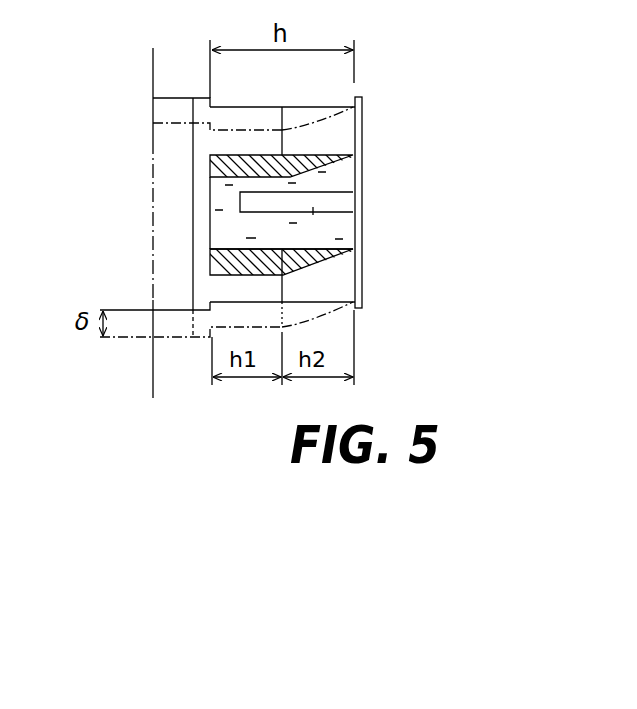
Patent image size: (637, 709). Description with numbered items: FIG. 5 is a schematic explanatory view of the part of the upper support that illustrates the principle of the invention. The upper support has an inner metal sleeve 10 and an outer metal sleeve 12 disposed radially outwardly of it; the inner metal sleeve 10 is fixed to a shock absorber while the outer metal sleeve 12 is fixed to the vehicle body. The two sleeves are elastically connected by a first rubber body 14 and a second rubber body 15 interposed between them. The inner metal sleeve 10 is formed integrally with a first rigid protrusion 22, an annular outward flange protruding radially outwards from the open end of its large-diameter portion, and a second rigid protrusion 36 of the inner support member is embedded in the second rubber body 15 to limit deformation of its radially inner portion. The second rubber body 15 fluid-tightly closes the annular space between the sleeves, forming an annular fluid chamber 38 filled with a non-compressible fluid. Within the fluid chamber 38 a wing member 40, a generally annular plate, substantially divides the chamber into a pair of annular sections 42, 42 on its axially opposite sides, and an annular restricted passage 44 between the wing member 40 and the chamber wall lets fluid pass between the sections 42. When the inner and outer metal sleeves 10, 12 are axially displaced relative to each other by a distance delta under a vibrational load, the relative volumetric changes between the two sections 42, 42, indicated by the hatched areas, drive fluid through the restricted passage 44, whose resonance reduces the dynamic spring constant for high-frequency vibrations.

The inner metal sleeve 10 is at (200, 210).
The outer metal sleeve 12 is at (362, 165).
The first rubber body 14 is at (322, 287).
The second rubber body 15 is at (310, 110).
The first rigid protrusion 22 is at (238, 288).
The second rigid protrusion 36 is at (237, 117).
The annular fluid chamber 38 is at (218, 232).
The wing member 40 is at (316, 214).
The annular sections 42 is at (337, 173).
The annular restricted passage 44 is at (220, 197).